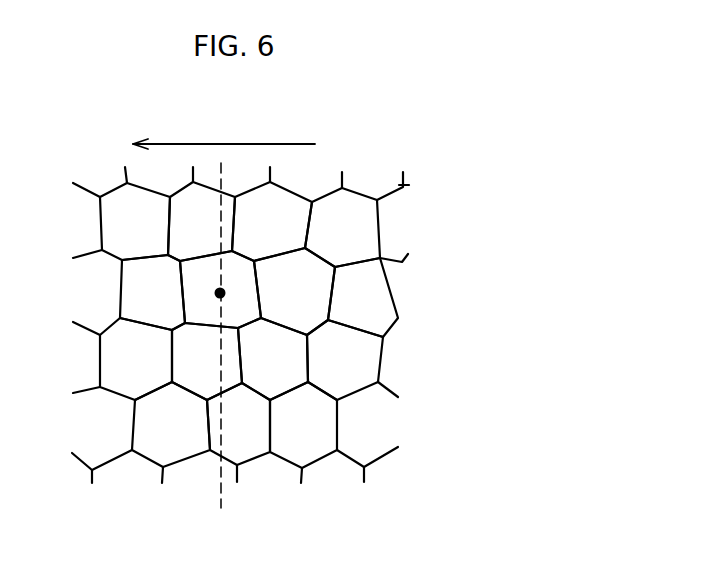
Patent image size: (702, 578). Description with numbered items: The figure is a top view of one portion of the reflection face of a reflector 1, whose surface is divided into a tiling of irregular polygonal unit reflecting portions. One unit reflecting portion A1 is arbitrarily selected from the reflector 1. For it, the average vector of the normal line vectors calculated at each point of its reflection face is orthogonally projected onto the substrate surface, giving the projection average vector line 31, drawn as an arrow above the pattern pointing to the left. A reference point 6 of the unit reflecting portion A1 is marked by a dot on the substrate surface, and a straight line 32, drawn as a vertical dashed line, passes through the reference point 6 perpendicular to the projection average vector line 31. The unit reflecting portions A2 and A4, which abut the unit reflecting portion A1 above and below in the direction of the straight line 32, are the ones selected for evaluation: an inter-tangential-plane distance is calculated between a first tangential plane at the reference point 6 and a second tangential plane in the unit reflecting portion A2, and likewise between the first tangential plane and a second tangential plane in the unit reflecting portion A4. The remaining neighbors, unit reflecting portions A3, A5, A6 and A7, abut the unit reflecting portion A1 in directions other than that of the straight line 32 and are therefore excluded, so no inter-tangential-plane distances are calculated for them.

The reflector 1 is at (38, 177).
The reference point 6 is at (220, 293).
The projection average vector line 31 is at (287, 144).
The straight line 32 is at (240, 331).
The unit reflecting portion A1 is at (220, 289).
The unit reflecting portion A2 is at (201, 221).
The unit reflecting portion A3 is at (152, 292).
The unit reflecting portion A4 is at (207, 361).
The unit reflecting portion A5 is at (273, 359).
The unit reflecting portion A6 is at (294, 291).
The unit reflecting portion A7 is at (272, 221).